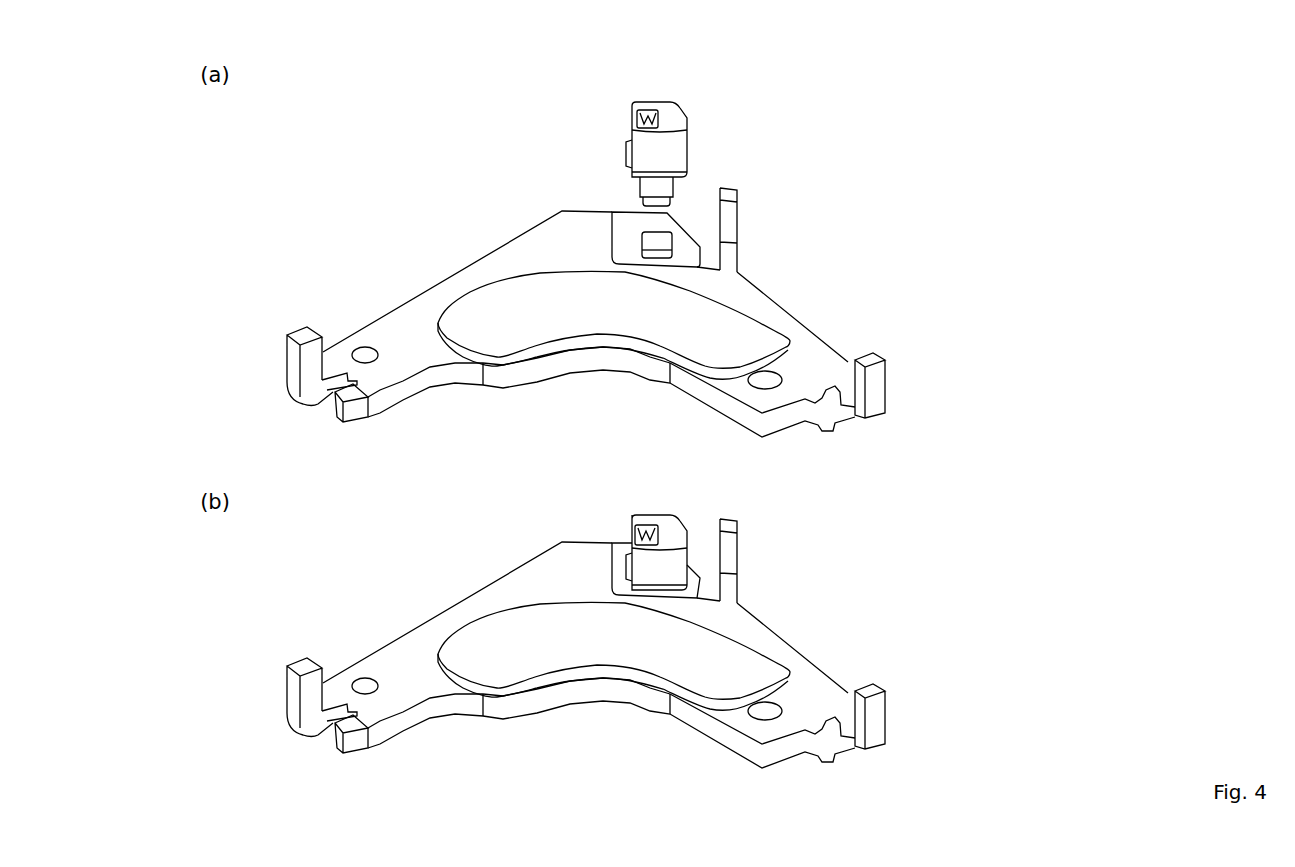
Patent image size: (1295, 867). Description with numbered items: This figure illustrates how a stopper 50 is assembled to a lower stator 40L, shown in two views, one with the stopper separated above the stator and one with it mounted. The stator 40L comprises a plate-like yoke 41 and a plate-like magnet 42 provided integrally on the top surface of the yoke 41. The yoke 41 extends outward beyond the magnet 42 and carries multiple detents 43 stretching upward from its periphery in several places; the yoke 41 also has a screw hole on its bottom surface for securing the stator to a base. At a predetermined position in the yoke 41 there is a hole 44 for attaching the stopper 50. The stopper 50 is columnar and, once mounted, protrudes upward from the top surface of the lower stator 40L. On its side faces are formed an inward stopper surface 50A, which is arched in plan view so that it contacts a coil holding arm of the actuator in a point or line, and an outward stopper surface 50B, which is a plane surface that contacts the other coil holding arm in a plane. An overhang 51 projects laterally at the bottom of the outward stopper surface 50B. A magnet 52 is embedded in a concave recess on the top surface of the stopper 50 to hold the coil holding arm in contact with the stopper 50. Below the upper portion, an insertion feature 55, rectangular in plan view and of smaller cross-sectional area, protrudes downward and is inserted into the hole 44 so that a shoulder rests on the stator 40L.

The lower stator 40L is at (527, 262).
The yoke 41 is at (432, 288).
The magnet 42 is at (623, 320).
The detents 43 is at (730, 219).
The hole 44 is at (657, 240).
The stopper 50 is at (674, 103).
The inward stopper surface 50A is at (683, 143).
The outward stopper surface 50B is at (628, 142).
The overhang 51 is at (627, 173).
The magnet 52 is at (652, 112).
The insertion feature 55 is at (647, 190).